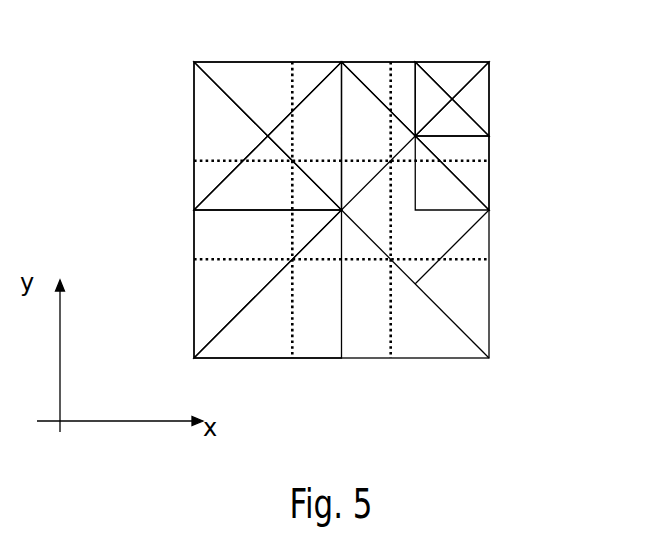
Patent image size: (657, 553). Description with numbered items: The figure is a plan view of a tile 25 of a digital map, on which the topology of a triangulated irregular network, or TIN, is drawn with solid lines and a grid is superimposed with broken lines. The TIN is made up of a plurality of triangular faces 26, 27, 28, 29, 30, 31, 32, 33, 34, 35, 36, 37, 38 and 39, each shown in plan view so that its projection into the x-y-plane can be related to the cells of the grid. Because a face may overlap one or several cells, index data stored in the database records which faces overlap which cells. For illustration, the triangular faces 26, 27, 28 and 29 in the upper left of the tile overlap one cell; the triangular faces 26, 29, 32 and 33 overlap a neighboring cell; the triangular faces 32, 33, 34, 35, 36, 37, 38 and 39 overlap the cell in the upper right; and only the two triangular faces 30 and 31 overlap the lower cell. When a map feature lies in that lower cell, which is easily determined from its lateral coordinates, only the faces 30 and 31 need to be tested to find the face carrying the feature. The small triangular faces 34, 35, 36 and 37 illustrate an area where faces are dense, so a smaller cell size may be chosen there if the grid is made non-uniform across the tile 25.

The tile 25 is at (489, 321).
The triangular face 26 is at (238, 72).
The triangular face 27 is at (203, 118).
The triangular face 28 is at (236, 187).
The triangular face 29 is at (321, 99).
The triangular face 30 is at (200, 271).
The triangular face 31 is at (234, 341).
The triangular face 32 is at (362, 98).
The triangular face 33 is at (400, 74).
The triangular face 34 is at (438, 100).
The triangular face 35 is at (473, 68).
The triangular face 36 is at (475, 93).
The triangular face 37 is at (475, 130).
The triangular face 38 is at (475, 173).
The triangular face 39 is at (475, 206).